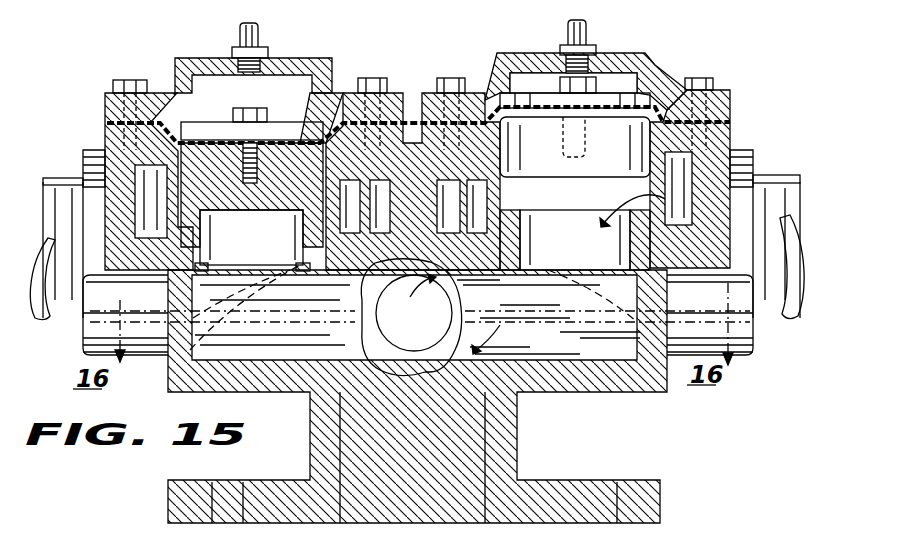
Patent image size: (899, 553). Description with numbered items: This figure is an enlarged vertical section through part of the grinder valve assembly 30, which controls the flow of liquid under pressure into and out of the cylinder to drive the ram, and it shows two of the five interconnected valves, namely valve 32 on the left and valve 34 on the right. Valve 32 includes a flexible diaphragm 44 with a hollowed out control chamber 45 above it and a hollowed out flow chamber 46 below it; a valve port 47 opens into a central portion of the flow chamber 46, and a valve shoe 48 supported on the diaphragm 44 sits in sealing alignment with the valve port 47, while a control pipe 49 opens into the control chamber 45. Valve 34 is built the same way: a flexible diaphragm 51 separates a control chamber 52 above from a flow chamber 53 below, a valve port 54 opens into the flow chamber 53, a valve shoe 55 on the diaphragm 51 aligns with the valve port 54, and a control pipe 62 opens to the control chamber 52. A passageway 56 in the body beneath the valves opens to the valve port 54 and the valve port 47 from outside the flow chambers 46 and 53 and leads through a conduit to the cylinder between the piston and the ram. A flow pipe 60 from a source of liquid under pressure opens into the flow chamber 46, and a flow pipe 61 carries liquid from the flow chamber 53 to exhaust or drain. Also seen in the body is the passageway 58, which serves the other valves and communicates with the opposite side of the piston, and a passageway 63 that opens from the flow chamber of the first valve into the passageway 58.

The grinder valve assembly 30 is at (693, 69).
The valve 32 is at (175, 60).
The valve 34 is at (650, 55).
The flexible diaphragm 44 is at (418, 119).
The control chamber 45 is at (177, 80).
The flow chamber 46 is at (143, 215).
The valve port 47 is at (240, 270).
The valve shoe 48 is at (181, 195).
The control pipe 49 is at (260, 35).
The flexible diaphragm 51 is at (477, 93).
The control chamber 52 is at (538, 80).
The flow chamber 53 is at (700, 178).
The valve port 54 is at (527, 192).
The valve shoe 55 is at (610, 162).
The passageway 56 is at (268, 360).
The passageway 58 is at (368, 302).
The flow pipe 60 is at (65, 325).
The flow pipe 61 is at (763, 322).
The control pipe 62 is at (590, 30).
The passageway 63 is at (407, 338).